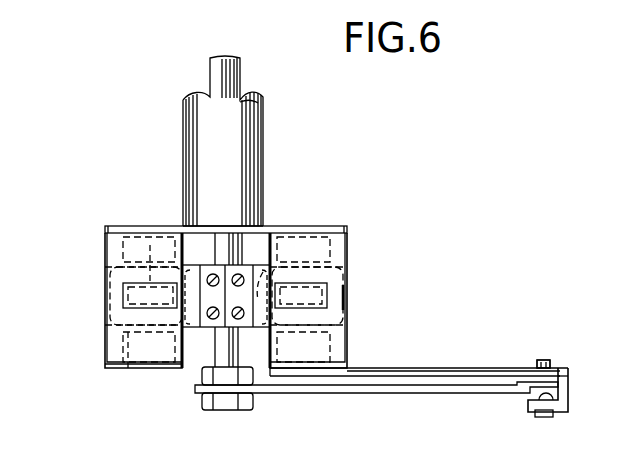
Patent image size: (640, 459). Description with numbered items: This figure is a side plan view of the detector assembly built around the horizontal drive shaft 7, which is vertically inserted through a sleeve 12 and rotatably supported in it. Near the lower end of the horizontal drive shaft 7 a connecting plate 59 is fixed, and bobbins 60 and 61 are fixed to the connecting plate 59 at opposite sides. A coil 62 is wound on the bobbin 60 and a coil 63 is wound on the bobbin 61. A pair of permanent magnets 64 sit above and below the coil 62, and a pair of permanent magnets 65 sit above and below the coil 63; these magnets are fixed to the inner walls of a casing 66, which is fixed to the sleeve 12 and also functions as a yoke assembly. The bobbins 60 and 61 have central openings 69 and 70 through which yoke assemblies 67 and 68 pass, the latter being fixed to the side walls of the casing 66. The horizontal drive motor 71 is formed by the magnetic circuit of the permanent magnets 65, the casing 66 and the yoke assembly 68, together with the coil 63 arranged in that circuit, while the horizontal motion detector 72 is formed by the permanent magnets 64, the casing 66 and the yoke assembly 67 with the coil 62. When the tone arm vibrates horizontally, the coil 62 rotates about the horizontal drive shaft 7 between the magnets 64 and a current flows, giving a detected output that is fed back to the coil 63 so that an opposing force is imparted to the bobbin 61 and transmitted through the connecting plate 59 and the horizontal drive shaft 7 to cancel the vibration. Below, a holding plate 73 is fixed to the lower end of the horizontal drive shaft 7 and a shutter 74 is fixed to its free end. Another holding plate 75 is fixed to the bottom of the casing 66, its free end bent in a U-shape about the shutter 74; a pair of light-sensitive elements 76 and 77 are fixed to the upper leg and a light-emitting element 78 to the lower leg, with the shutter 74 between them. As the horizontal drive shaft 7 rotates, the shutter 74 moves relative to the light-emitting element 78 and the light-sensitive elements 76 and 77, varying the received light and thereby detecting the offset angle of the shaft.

The horizontal drive shaft 7 is at (220, 345).
The sleeve 12 is at (202, 132).
The connecting plate 59 is at (263, 272).
The bobbin 60 is at (118, 285).
The bobbin 61 is at (343, 297).
The coil 62 is at (107, 307).
The coil 63 is at (347, 303).
The permanent magnets 64 is at (120, 240).
The permanent magnets 65 is at (342, 238).
The casing 66 is at (307, 227).
The yoke assembly 67 is at (150, 245).
The yoke assembly 68 is at (295, 305).
The central opening 69 is at (128, 372).
The central opening 70 is at (347, 277).
The horizontal drive motor 71 is at (103, 377).
The horizontal motion detector 72 is at (280, 156).
The holding plate 73 is at (425, 397).
The shutter 74 is at (560, 380).
The holding plate 75 is at (455, 368).
The light-sensitive element 76 is at (542, 358).
The light-sensitive element 77 is at (542, 358).
The light-emitting element 78 is at (563, 397).